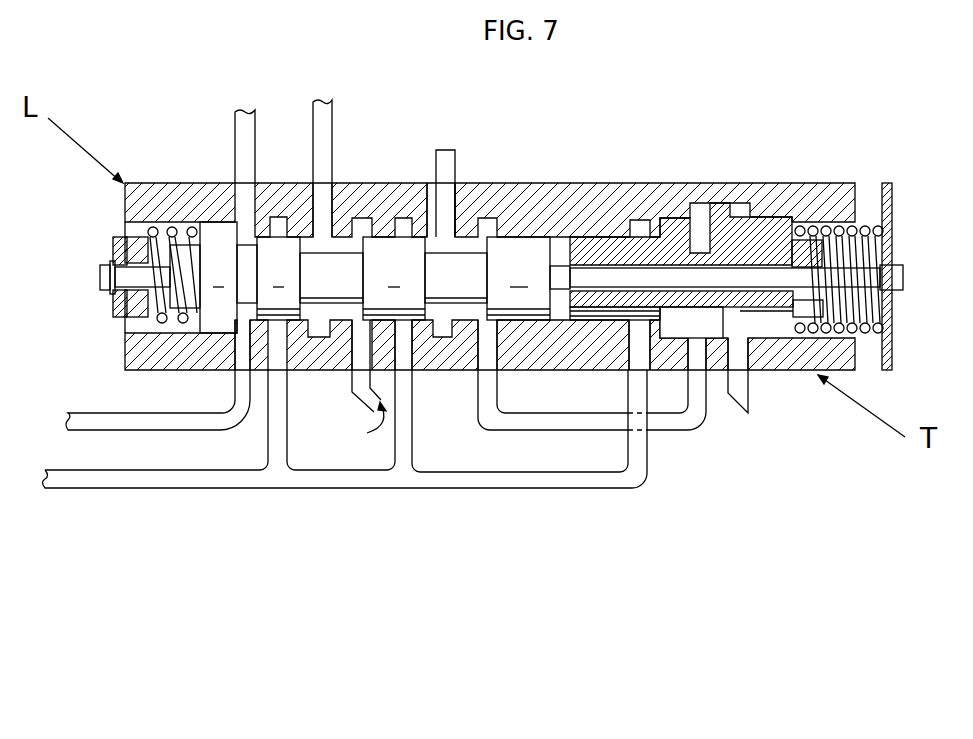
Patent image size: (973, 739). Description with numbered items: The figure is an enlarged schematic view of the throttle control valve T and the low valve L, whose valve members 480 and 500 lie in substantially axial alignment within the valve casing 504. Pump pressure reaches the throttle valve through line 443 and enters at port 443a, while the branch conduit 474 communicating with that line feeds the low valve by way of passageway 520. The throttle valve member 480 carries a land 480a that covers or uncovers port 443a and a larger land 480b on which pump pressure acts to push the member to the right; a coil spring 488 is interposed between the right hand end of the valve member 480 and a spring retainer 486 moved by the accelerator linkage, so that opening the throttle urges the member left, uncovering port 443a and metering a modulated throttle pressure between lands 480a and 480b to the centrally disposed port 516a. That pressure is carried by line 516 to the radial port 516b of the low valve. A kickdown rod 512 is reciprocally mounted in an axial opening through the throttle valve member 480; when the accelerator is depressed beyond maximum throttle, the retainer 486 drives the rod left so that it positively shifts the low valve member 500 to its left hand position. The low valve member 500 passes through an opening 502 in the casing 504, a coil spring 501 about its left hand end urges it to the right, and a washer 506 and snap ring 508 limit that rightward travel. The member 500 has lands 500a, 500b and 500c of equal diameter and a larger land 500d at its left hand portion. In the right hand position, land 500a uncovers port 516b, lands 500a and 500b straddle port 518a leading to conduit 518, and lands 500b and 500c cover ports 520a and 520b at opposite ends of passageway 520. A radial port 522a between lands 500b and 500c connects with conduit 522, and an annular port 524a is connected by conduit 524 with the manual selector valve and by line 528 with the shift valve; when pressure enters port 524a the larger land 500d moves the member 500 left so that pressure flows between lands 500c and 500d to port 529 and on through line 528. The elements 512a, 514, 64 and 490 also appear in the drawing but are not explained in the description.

The coil spring 501 is at (150, 222).
The opening 502 is at (115, 244).
The valve casing 504 is at (143, 308).
The washer 506 is at (140, 272).
The snap ring 508 is at (108, 291).
The port 529 is at (218, 243).
The low valve member 500 is at (466, 250).
The land 500a is at (523, 242).
The land 500b is at (383, 247).
The land 500c is at (293, 247).
The land 500d is at (204, 247).
The line 528 is at (255, 115).
The conduit 522 is at (334, 104).
The radial port 522a is at (338, 195).
The conduit 518 is at (447, 150).
The port 518a is at (430, 235).
The spool stem shoulder 512a is at (562, 266).
The spool stem 514 is at (687, 268).
The throttle valve member 480 is at (712, 253).
The land 480a is at (615, 238).
The land 480b is at (772, 222).
The spring retainer 486 is at (890, 192).
The coil spring 488 is at (858, 332).
The kickdown rod 512 is at (898, 268).
The annular port 524a is at (228, 347).
The conduit 524 is at (73, 434).
The branch conduit 474 is at (282, 407).
The port 520a is at (288, 345).
The flow arrow 64 is at (358, 426).
The port 520b is at (414, 340).
The passageway 520 is at (410, 438).
The radial port 516b is at (505, 345).
The line 516 is at (662, 425).
The port 516a is at (698, 362).
The line 443 is at (582, 488).
The port 443a is at (628, 362).
The drain pipe 490 is at (738, 383).